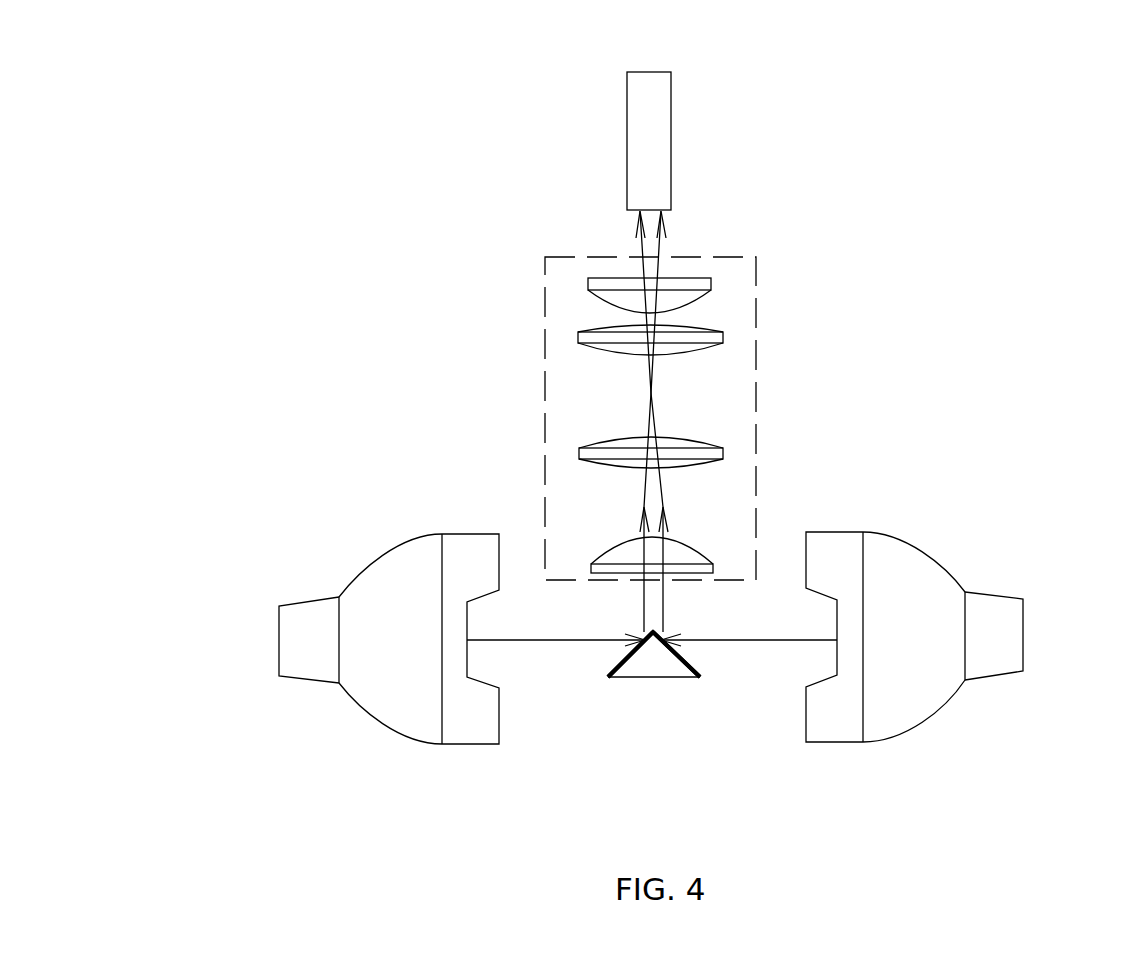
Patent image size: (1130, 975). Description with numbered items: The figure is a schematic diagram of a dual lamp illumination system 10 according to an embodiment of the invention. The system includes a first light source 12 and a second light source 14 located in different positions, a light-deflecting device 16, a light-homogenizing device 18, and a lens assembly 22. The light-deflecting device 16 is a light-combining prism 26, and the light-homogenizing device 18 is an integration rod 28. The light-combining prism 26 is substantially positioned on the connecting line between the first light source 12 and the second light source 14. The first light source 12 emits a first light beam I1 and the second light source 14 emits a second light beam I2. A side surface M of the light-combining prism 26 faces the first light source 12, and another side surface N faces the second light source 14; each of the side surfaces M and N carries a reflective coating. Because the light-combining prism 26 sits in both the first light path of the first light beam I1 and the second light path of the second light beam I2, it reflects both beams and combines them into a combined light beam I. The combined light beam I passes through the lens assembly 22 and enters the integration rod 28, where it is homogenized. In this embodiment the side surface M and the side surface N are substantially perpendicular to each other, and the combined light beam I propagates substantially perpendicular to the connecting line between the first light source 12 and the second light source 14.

The dual lamp illumination system 10 is at (218, 149).
The first light source 12 is at (377, 557).
The second light source 14 is at (935, 559).
The light-deflecting device 16 is at (581, 719).
The light-combining prism 26 is at (636, 678).
The light-homogenizing device 18 is at (765, 119).
The integration rod 28 is at (672, 145).
The lens assembly 22 is at (755, 325).
The combined light beam I is at (656, 421).
The first light beam I1 is at (556, 627).
The second light beam I2 is at (749, 627).
The side surface M is at (620, 663).
The side surface N is at (687, 663).